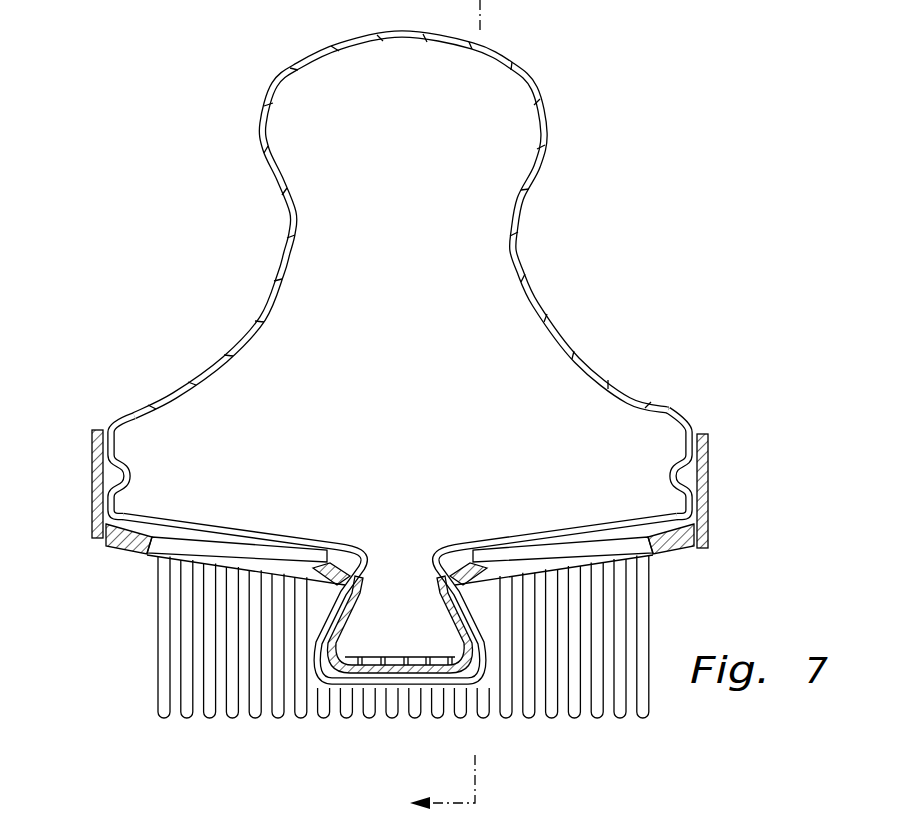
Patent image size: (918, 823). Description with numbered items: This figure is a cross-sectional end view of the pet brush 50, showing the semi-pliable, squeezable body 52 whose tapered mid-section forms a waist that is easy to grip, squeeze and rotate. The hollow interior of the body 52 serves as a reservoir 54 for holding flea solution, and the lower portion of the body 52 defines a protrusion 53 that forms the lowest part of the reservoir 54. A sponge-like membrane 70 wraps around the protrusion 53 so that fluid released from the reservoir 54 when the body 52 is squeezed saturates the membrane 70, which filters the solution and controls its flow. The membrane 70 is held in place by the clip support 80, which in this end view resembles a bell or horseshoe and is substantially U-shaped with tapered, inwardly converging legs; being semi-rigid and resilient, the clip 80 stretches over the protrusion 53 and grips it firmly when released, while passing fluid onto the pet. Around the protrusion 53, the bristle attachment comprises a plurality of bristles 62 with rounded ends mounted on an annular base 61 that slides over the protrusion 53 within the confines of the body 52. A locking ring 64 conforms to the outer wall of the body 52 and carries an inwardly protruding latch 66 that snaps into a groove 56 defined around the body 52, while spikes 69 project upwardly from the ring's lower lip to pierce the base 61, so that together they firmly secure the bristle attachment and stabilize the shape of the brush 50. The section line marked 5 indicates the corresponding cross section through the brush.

The brush 50 is at (430, 403).
The body 52 is at (538, 80).
The reservoir 54 is at (468, 242).
The groove 56 is at (112, 468).
The annular base 61 is at (108, 525).
The bristles 62 is at (157, 680).
The locking ring 64 is at (130, 547).
The latch 66 is at (110, 477).
The spikes 69 is at (115, 537).
The membrane 70 is at (345, 592).
The clip support 80 is at (327, 673).
The protrusion 53 is at (388, 663).
The section line 5- 5 is at (452, 411).